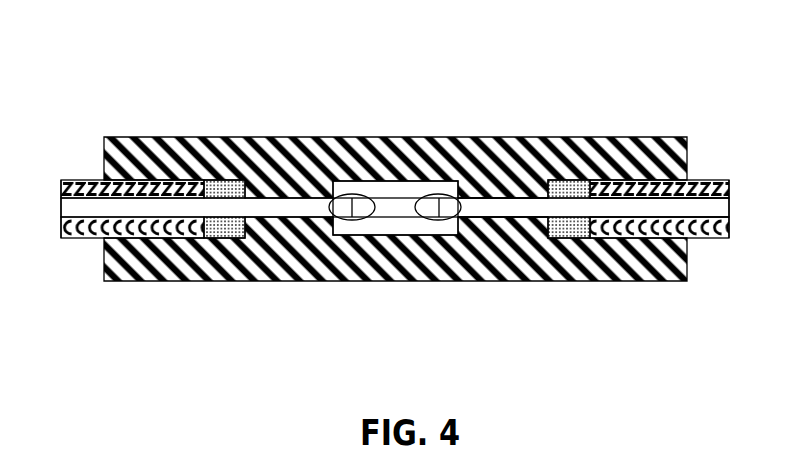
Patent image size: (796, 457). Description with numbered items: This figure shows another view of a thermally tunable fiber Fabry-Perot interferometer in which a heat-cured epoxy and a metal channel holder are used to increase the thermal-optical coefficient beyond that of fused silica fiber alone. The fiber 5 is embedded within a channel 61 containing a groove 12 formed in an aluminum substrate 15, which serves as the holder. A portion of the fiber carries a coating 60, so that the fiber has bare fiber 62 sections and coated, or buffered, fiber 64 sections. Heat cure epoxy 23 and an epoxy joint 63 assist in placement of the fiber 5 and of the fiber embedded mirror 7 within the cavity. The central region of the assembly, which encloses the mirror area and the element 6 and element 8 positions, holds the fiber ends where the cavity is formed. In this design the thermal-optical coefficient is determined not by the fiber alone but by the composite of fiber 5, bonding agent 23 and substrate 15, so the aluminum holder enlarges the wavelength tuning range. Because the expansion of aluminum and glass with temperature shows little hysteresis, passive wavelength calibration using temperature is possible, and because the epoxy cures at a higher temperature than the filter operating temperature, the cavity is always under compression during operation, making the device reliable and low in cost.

The channel 61 is at (121, 166).
The aluminum substrate 15 is at (162, 255).
The fiber coating 60 is at (82, 188).
The heat cure epoxy 23 is at (219, 182).
The groove 12 is at (100, 240).
The fiber 5 is at (276, 207).
The connector housing 6 is at (402, 205).
The epoxy joint 63 is at (352, 205).
The fiber embedded mirror 7 is at (350, 207).
The second ferrule 8 is at (437, 207).
The bare fiber 62 is at (498, 207).
The coated fiber 64 is at (625, 208).